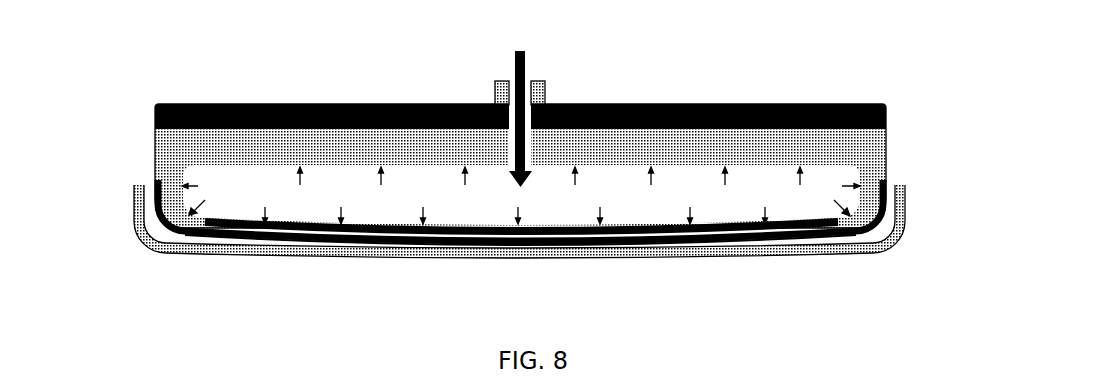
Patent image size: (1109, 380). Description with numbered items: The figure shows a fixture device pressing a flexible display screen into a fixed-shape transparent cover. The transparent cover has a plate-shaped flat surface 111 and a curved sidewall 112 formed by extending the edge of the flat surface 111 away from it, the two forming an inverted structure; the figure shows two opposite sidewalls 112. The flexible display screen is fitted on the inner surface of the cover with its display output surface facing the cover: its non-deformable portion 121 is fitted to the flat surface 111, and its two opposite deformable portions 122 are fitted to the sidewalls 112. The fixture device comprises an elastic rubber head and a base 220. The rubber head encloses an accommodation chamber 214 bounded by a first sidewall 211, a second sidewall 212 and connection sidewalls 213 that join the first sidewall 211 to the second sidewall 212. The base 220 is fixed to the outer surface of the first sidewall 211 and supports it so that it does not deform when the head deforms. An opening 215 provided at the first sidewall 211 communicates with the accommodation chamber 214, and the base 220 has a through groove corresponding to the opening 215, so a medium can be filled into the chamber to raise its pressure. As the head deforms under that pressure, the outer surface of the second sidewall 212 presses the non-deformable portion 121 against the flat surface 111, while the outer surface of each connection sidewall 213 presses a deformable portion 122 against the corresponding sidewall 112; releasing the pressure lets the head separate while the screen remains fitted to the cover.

The flat surface 111 is at (532, 245).
The sidewall 112 is at (128, 210).
The non-deformable portion 121 is at (312, 233).
The deformable portion 122 is at (137, 197).
The first sidewall 211 is at (293, 145).
The second sidewall 212 is at (470, 240).
The connection sidewall 213 is at (148, 173).
The accommodation chamber 214 is at (598, 178).
The opening 215 is at (466, 105).
The base 220 is at (730, 97).